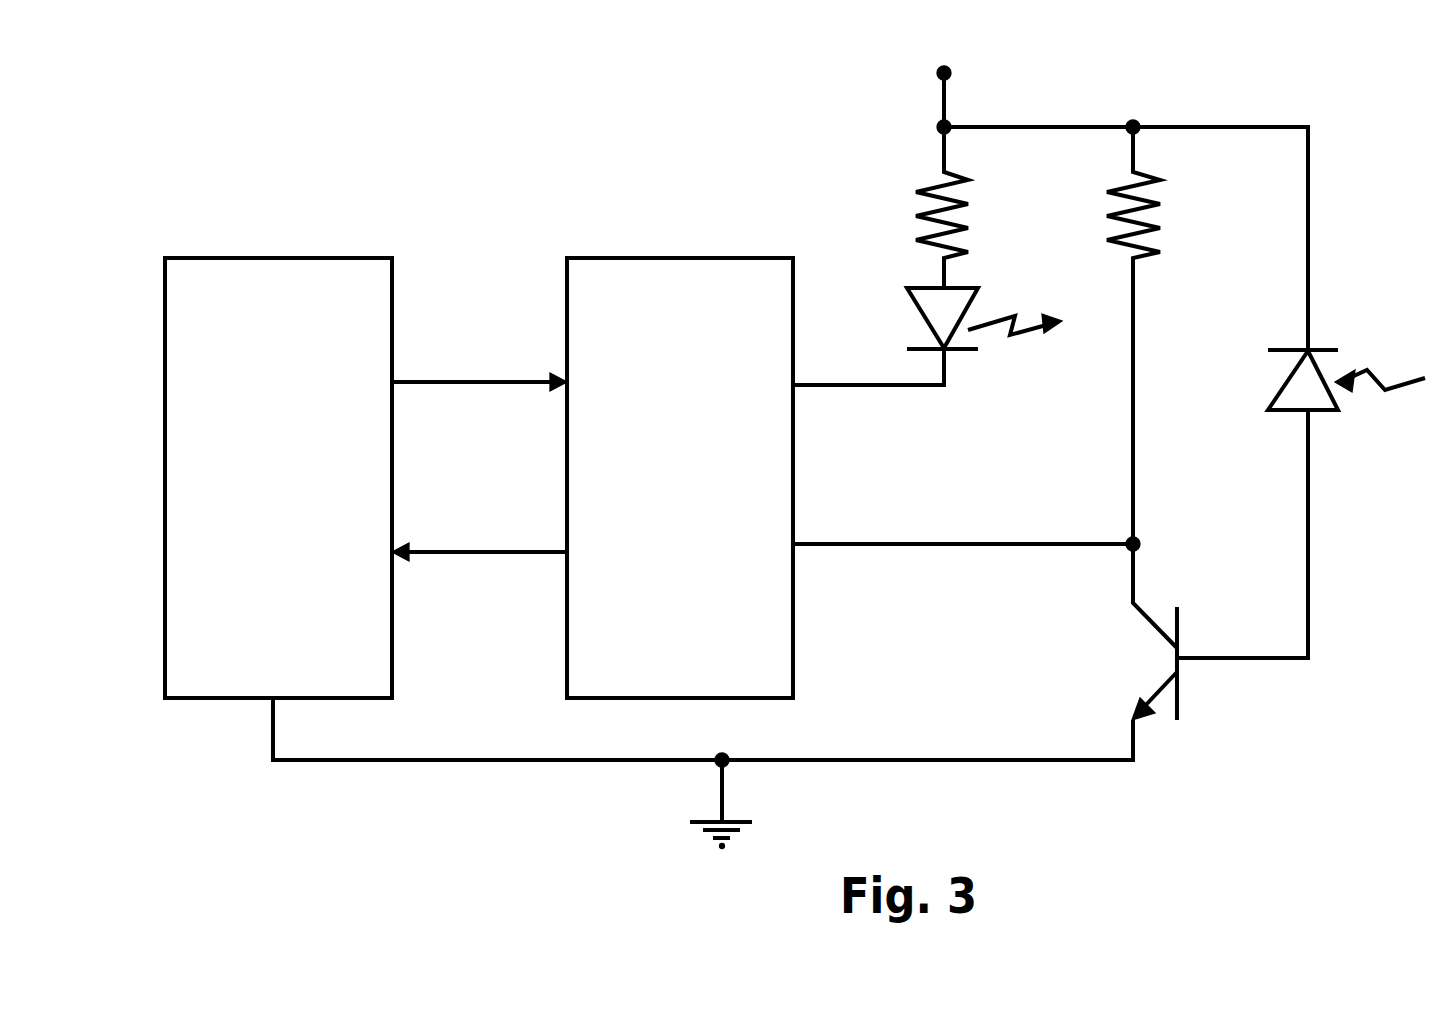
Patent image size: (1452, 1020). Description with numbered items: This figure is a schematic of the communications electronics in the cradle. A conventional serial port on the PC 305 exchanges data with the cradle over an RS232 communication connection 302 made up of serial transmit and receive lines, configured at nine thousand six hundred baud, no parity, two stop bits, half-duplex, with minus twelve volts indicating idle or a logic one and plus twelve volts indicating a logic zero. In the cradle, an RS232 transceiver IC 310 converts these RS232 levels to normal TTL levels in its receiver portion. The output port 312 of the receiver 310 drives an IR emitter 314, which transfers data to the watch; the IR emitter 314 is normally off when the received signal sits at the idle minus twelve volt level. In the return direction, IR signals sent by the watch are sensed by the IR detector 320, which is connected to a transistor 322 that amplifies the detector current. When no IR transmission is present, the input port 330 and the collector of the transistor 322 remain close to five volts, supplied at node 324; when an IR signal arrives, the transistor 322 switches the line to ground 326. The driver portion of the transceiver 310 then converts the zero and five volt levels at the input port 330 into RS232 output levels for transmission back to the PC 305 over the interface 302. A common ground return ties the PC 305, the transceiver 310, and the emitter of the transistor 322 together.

The PC 305 is at (368, 257).
The RS232 transceiver IC 310 is at (625, 257).
The RS232 communication connection 302 is at (540, 550).
The output port 312 is at (795, 392).
The input port 330 is at (795, 550).
The 5V supply node 324 is at (935, 127).
The IR emitter 314 is at (965, 323).
The IR detector 320 is at (1275, 392).
The transistor 322 is at (1178, 694).
The ground 326 is at (1128, 738).